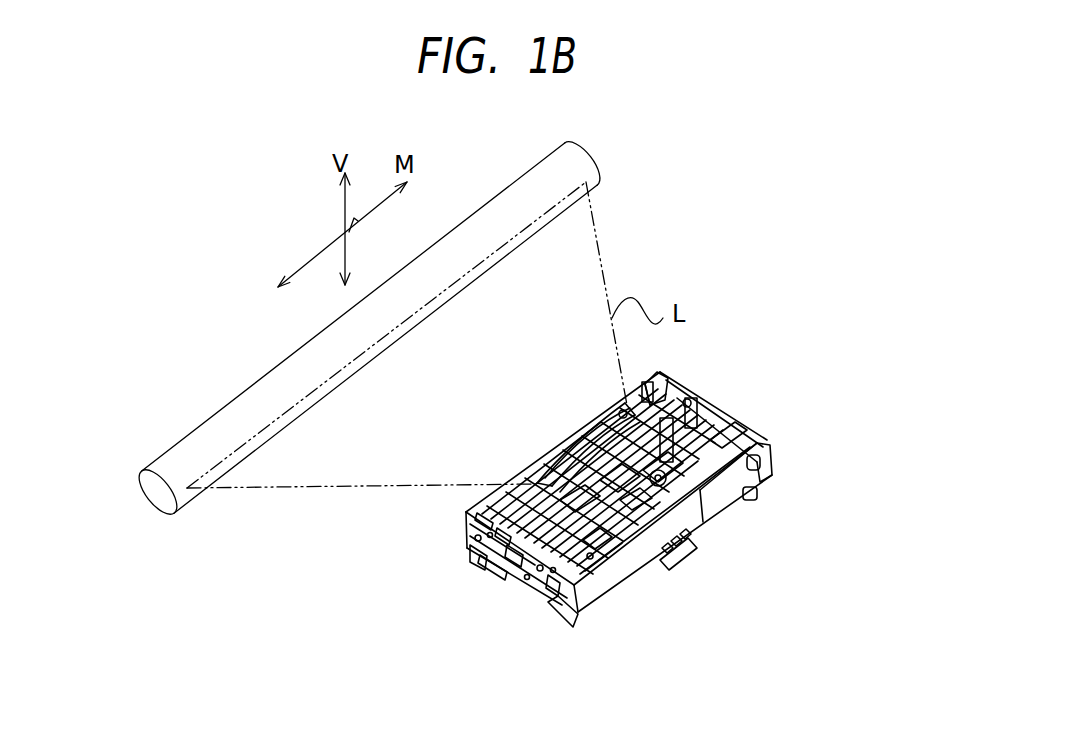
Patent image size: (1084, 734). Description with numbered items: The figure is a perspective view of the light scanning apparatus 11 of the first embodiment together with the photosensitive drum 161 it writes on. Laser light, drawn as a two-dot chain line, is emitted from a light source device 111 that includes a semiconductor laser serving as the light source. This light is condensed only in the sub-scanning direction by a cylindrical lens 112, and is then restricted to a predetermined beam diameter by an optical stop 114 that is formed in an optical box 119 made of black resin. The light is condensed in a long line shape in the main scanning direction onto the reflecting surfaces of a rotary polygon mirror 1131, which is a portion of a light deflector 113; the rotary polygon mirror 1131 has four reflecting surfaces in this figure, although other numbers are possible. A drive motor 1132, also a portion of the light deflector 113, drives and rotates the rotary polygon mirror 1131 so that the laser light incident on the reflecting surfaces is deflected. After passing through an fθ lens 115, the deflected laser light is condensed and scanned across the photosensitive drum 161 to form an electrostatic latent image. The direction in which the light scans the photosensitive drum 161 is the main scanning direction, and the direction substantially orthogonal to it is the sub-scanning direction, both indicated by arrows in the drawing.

The light scanning apparatus 11 is at (724, 348).
The light source device 111 is at (535, 560).
The cylindrical lens 112 is at (592, 548).
The light deflector 113 is at (848, 422).
The rotary polygon mirror 1131 is at (700, 513).
The drive motor 1132 is at (752, 441).
The optical stop 114 is at (620, 556).
The fθ lens 115 is at (588, 447).
The optical box 119 is at (715, 403).
The photosensitive drum 161 is at (177, 467).